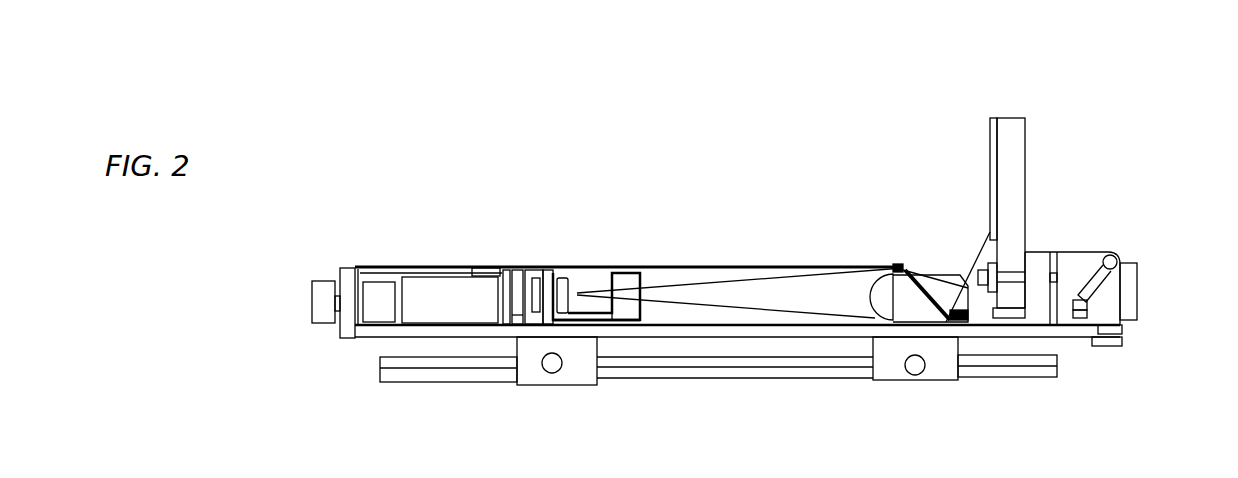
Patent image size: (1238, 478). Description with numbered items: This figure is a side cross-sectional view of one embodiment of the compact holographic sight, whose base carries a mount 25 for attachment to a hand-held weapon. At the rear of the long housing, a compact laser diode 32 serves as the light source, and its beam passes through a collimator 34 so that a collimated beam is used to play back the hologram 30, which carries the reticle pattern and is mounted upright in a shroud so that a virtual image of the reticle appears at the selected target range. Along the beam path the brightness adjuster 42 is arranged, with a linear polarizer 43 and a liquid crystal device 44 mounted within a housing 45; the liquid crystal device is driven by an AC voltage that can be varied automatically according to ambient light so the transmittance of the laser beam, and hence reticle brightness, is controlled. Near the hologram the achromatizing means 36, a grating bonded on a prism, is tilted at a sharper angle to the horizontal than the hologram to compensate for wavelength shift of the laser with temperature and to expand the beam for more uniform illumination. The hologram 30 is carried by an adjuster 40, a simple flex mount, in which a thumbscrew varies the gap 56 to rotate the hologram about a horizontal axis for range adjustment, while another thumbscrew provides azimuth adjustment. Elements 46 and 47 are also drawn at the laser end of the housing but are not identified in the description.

The mount 25 is at (942, 367).
The hologram 30 is at (903, 268).
The laser diode 32 is at (553, 312).
The collimator 34 is at (883, 300).
The achromatizing means 36 is at (940, 290).
The adjuster 40 is at (1103, 230).
The brightness adjuster 42 is at (628, 322).
The linear polarizer 43 is at (641, 308).
The liquid crystal device 44 is at (625, 278).
The housing 45 is at (637, 272).
The end plate with knob 46 is at (370, 325).
The motor housing 47 is at (465, 268).
The gap 56 is at (1088, 285).